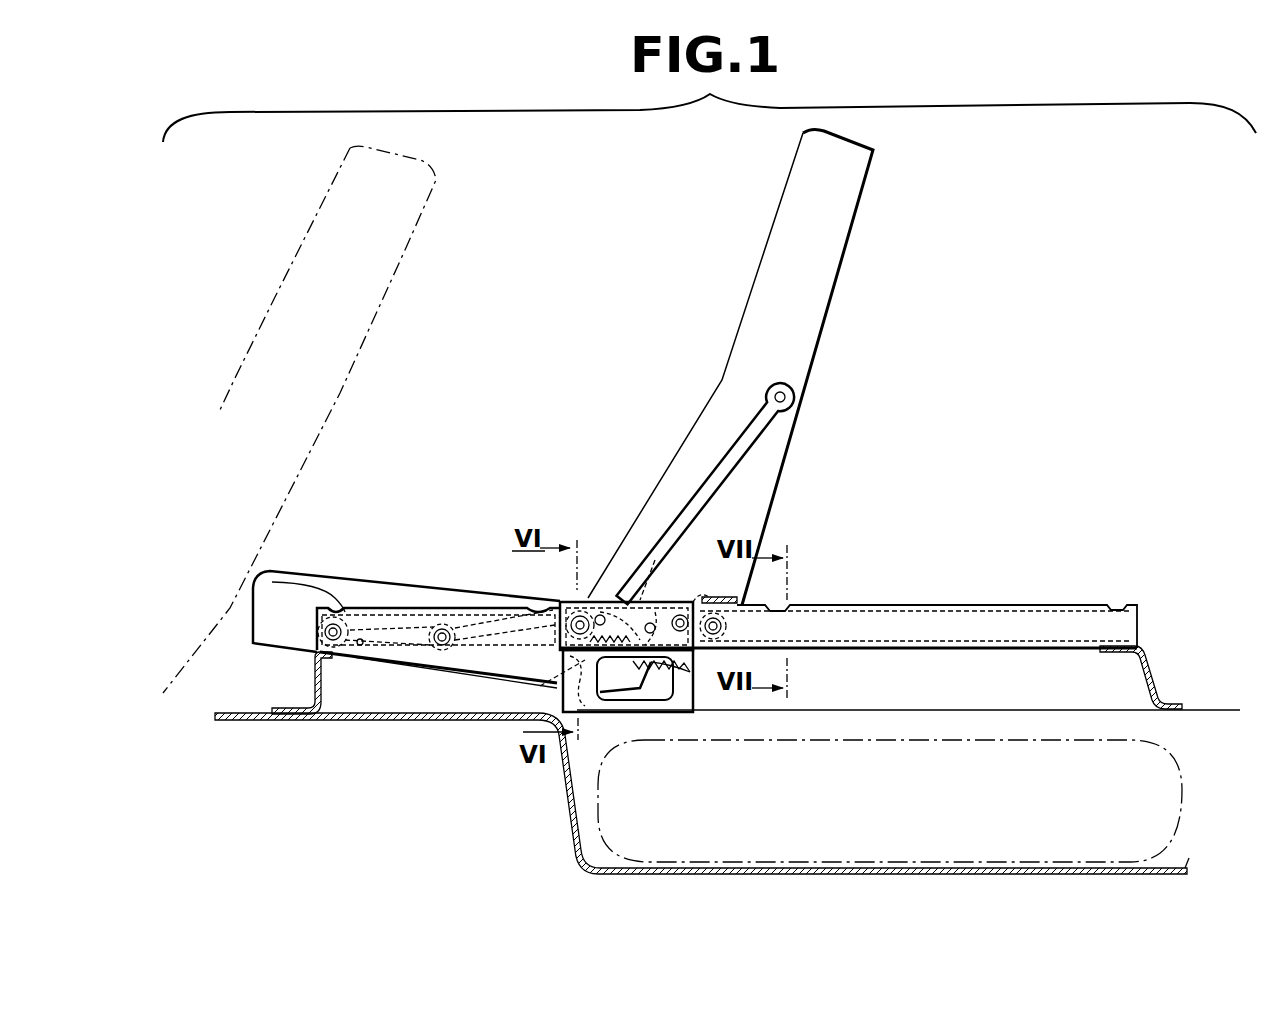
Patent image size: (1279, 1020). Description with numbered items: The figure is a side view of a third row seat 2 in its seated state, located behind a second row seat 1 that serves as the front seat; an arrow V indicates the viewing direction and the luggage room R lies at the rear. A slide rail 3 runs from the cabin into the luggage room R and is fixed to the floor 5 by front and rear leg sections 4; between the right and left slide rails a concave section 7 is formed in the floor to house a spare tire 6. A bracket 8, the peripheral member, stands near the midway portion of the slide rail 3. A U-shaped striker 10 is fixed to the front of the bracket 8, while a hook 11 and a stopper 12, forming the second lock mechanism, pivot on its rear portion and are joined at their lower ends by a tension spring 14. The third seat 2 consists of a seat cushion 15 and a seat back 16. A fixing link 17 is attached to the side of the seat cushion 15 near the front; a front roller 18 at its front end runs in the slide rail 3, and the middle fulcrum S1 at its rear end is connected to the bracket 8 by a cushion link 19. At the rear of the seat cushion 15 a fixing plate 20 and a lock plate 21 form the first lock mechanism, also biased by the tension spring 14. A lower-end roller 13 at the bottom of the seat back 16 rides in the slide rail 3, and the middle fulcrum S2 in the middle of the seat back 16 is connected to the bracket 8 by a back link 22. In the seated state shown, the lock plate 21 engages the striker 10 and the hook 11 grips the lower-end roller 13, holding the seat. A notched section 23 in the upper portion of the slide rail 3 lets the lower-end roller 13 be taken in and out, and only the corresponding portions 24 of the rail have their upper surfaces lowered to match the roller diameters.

The second row seat 1 is at (272, 295).
The third row seat 2 is at (615, 375).
The slide rail 3 is at (1015, 620).
The leg section 4 is at (305, 688).
The floor 5 is at (218, 712).
The spare tire 6 is at (1185, 790).
The concave section 7 is at (928, 870).
The bracket 8 is at (690, 690).
The striker 10 is at (583, 705).
The hook 11 is at (705, 598).
The stopper 12 is at (637, 600).
The lower-end roller 13 is at (727, 632).
The tension spring 14 is at (600, 572).
The seat cushion 15 is at (330, 580).
The seat back 16 is at (770, 235).
The fixing link 17 is at (442, 665).
The front roller 18 is at (365, 600).
The cushion link 19 is at (522, 602).
The fixing plate 20 is at (540, 686).
The lock plate 21 is at (612, 712).
The back link 22 is at (755, 425).
The notched section 23 is at (790, 602).
The corresponding portions 24 is at (335, 622).
The middle fulcrum S1 is at (443, 645).
The middle fulcrum S2 is at (776, 390).
The direction V is at (622, 262).
The luggage room R is at (955, 440).